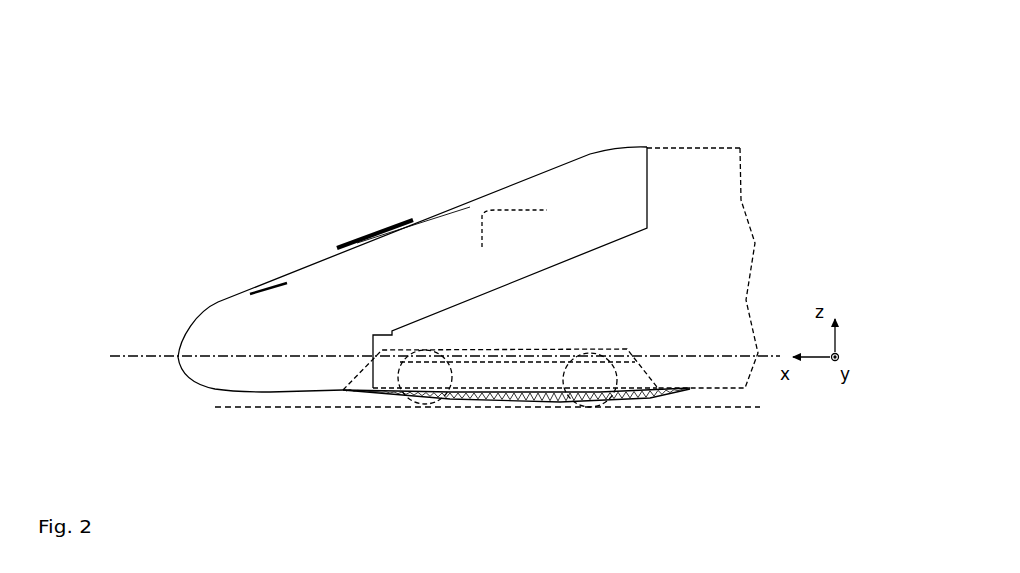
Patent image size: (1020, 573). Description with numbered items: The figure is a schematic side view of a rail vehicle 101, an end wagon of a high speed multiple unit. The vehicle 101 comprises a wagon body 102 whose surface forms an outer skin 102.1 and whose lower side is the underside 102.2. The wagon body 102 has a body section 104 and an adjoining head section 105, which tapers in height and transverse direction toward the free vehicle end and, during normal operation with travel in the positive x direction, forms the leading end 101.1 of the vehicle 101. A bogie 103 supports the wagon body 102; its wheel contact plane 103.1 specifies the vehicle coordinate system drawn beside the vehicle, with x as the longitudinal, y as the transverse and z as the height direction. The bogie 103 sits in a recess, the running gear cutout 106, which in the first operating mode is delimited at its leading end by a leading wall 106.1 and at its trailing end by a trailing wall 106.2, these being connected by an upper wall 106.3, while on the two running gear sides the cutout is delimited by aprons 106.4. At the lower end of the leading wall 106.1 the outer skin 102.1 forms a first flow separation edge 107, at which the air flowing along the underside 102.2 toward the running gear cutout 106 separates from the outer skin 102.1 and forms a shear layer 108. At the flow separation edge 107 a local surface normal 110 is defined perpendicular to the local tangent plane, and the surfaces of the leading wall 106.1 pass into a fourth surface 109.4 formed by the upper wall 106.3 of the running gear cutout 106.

The rail vehicle 101 is at (769, 52).
The leading end 101.1 is at (172, 357).
The wagon body 102 is at (667, 146).
The outer skin 102.1 is at (601, 148).
The underside 102.2 is at (498, 420).
The bogie 103 is at (594, 411).
The wheel contact plane 103.1 is at (720, 411).
The body section 104 is at (729, 146).
The head section 105 is at (557, 165).
The running gear cutout 106 is at (528, 376).
The leading wall 106.1 is at (363, 365).
The trailing wall 106.2 is at (652, 375).
The upper wall 106.3 is at (482, 346).
The aprons 106.4 is at (618, 367).
The first flow separation edge 107 is at (343, 388).
The shear layer 108 is at (367, 398).
The fourth surface 109.4 is at (433, 355).
The local surface normal 110 is at (342, 396).